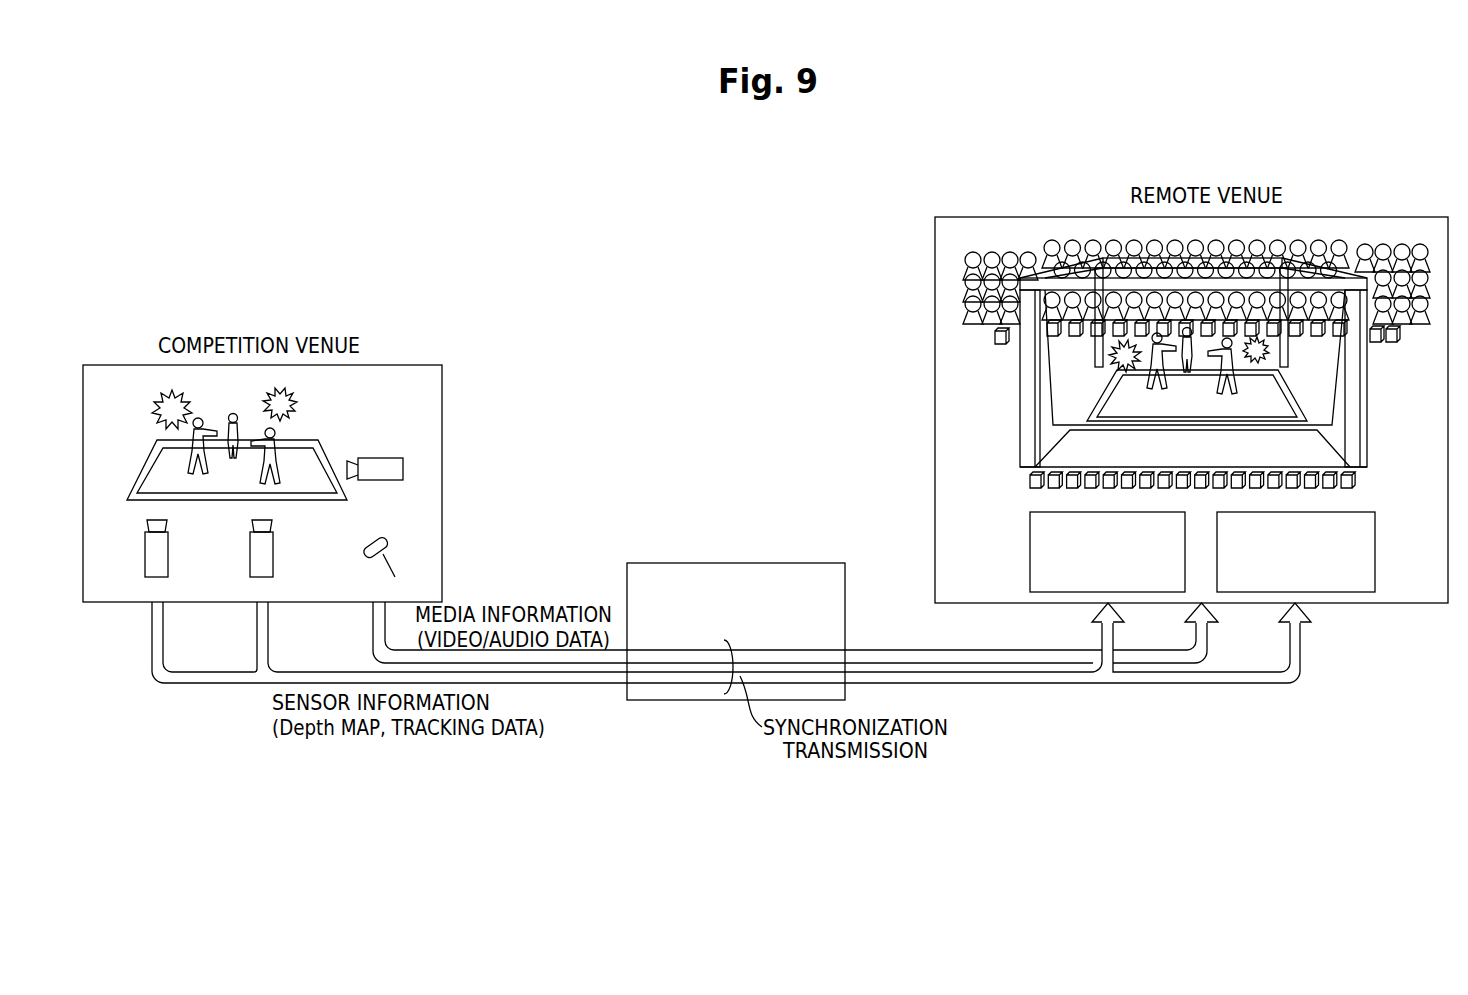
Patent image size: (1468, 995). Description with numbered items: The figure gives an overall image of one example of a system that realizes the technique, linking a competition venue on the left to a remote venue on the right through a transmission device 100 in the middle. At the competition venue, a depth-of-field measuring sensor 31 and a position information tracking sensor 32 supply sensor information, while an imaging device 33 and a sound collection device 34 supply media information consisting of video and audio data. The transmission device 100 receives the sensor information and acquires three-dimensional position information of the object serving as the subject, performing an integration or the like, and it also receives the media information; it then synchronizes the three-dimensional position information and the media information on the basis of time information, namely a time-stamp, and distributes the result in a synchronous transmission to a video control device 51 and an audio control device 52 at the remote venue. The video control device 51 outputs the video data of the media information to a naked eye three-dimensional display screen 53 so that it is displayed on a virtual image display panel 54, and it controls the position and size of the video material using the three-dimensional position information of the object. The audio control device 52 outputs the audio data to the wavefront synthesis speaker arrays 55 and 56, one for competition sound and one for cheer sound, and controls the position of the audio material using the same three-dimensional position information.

The depth-of-field measuring sensor 31 is at (168, 555).
The position information tracking sensor 32 is at (273, 555).
The imaging device 33 is at (382, 458).
The sound collection device 34 is at (373, 538).
The transmission device 100 is at (740, 563).
The video control device 51 is at (1030, 548).
The audio control device 52 is at (1375, 540).
The naked eye 3D display screen 53 is at (1062, 450).
The virtual image display panel 54 is at (1062, 390).
The wavefront synthesis speaker array 55 is at (1030, 474).
The wavefront synthesis speaker array 56 is at (1392, 343).